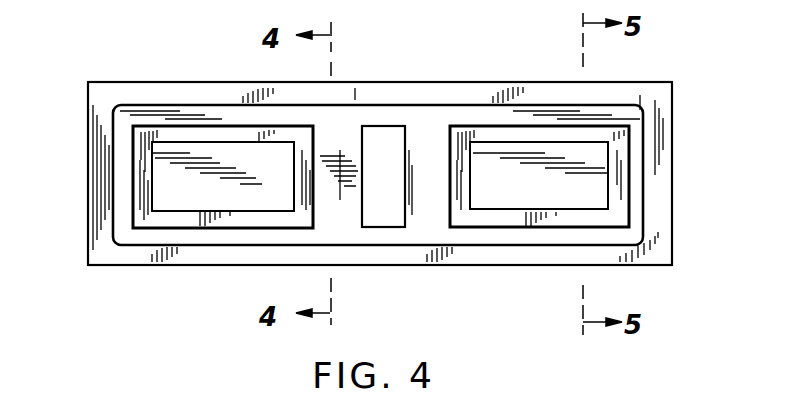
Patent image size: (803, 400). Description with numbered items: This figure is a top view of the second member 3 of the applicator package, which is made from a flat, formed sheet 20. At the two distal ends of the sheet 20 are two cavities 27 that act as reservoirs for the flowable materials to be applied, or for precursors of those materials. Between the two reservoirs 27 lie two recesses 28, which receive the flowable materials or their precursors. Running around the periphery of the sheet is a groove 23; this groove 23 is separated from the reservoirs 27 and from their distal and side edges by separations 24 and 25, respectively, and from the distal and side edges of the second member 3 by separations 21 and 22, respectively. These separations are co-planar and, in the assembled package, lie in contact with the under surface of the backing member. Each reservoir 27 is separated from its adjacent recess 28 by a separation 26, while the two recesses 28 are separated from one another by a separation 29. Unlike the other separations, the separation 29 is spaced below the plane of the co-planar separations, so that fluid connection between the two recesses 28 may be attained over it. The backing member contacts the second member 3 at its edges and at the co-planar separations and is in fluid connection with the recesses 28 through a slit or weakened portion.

The second member 3 is at (675, 234).
The flat, formed sheet 20 is at (505, 86).
The separation 21 is at (98, 102).
The separation 22 is at (360, 92).
The groove 23 is at (215, 118).
The separation 24 is at (141, 201).
The separation 25 is at (548, 212).
The separation 26 is at (311, 178).
The cavity 27 is at (196, 193).
The recess 28 is at (337, 177).
The separation 29 is at (383, 140).